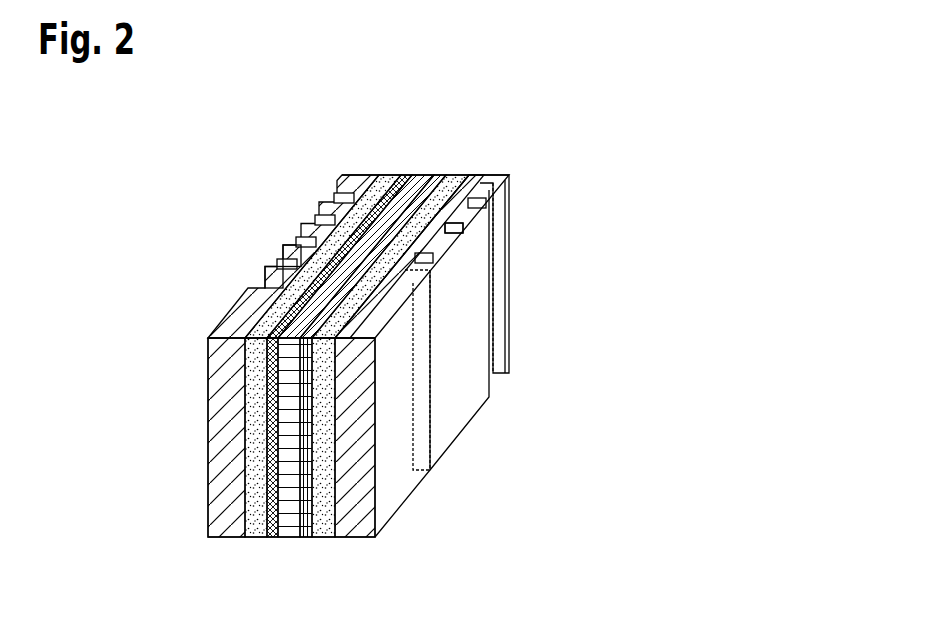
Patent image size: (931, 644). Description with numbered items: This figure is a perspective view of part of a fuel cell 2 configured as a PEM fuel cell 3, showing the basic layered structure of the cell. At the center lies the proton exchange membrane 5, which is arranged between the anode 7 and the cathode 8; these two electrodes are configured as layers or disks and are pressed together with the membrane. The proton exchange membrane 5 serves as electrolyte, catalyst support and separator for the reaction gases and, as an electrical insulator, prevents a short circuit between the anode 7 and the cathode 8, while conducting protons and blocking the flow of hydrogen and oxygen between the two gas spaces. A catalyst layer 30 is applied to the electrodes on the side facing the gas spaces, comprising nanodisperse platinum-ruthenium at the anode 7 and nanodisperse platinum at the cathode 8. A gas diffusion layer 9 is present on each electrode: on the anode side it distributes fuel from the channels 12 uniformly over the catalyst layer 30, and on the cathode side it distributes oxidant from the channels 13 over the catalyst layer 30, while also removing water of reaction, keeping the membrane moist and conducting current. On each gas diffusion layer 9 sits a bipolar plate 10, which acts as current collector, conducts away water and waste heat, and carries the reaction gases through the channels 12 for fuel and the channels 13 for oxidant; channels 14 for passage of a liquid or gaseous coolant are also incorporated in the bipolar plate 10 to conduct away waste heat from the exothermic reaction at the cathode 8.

The fuel cell 2 is at (537, 483).
The PEM fuel cell 3 is at (541, 490).
The proton exchange membrane 5 is at (421, 176).
The anode 7 is at (277, 540).
The cathode 8 is at (303, 540).
The gas diffusion layer 9 is at (388, 176).
The bipolar plate 10 is at (368, 176).
The channels for fuel 12 is at (308, 230).
The channels for oxidant 13 is at (455, 217).
The channels for coolant 14 is at (300, 250).
The catalyst layer 30 is at (268, 540).